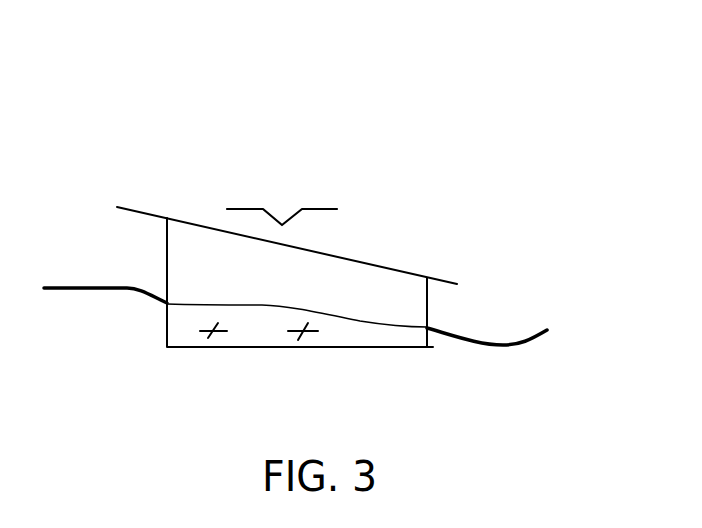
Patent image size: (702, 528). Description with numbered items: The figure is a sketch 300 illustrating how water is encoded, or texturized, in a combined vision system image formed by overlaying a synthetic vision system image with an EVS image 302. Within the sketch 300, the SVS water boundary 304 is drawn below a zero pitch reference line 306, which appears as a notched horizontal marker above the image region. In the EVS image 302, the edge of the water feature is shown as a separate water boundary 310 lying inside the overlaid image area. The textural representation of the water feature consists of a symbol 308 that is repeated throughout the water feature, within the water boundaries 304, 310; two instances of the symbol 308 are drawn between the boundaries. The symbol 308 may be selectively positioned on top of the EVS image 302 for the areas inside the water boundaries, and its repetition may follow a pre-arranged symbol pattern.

The sketch 300 is at (493, 142).
The EVS image 302 is at (415, 303).
The SVS water boundary 304 is at (97, 290).
The zero pitch reference line 306 is at (327, 208).
The symbol 308 is at (217, 333).
The water boundary 310 is at (368, 318).